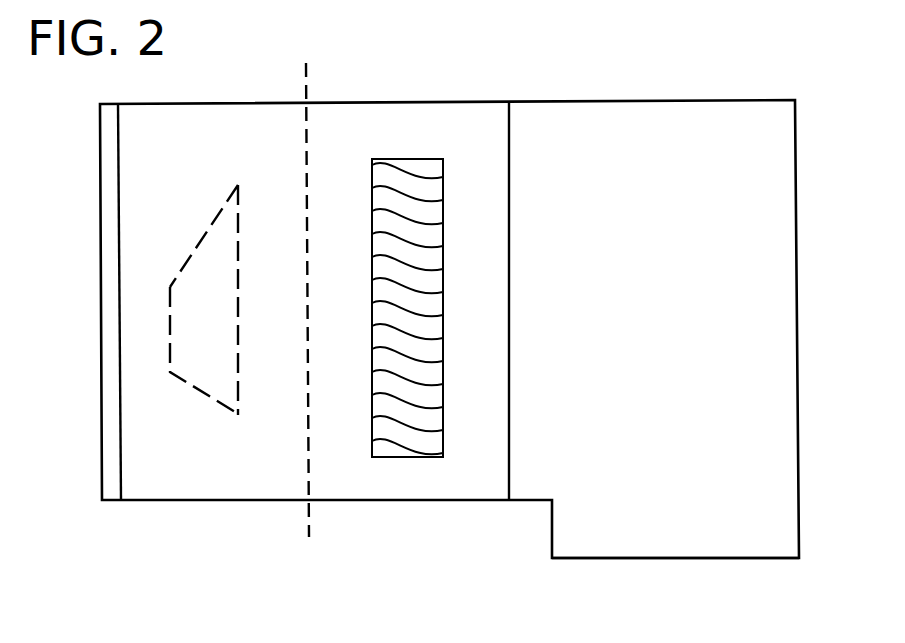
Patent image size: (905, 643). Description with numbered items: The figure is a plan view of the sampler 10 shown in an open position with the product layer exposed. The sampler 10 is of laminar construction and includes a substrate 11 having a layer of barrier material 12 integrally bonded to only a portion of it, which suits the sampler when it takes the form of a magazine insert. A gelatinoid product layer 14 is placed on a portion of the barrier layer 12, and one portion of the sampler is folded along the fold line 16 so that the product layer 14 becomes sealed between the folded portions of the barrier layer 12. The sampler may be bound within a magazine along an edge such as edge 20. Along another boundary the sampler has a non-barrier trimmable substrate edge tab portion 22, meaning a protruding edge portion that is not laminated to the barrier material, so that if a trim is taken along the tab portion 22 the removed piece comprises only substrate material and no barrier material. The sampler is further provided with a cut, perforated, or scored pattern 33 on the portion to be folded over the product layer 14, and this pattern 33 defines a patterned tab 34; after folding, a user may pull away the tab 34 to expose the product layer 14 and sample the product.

The sampler 10 is at (695, 83).
The substrate 11 is at (110, 405).
The layer of barrier material 12 is at (452, 132).
The gelatinoid product layer 14 is at (408, 168).
The fold line 16 is at (312, 515).
The edge 20 is at (797, 258).
The non-barrier trimmable substrate edge tab 22 is at (687, 542).
The cut, perforated, or scored pattern 33 is at (178, 283).
The patterned tab 34 is at (223, 240).